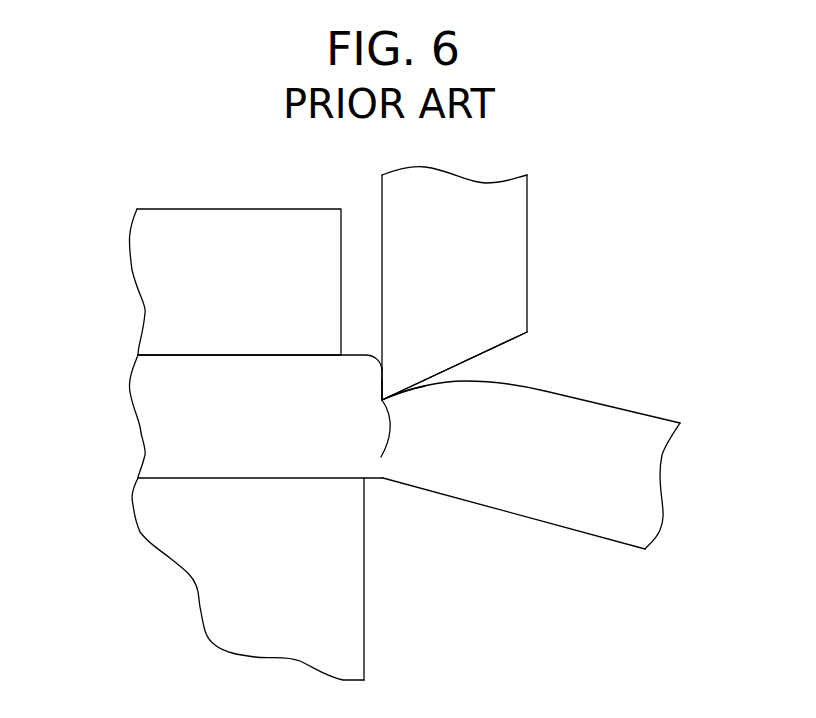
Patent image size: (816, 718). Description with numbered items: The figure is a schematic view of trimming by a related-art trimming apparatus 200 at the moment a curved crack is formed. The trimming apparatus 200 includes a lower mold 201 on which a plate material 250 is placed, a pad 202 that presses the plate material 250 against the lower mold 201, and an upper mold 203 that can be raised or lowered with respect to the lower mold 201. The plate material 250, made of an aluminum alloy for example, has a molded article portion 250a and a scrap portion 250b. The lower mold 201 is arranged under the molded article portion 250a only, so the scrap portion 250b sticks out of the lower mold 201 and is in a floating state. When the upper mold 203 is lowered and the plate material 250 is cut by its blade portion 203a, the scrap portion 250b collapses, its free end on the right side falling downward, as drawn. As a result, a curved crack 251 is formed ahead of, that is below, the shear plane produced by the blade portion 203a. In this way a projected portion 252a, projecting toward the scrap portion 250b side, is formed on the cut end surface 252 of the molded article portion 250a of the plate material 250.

The trimming apparatus 200 is at (591, 178).
The lower mold 201 is at (352, 603).
The pad 202 is at (268, 219).
The upper mold 203 is at (512, 237).
The blade portion 203a is at (381, 393).
The plate material 250 is at (573, 398).
The molded article portion 250a is at (165, 418).
The scrap portion 250b is at (628, 428).
The curved crack 251 is at (390, 408).
The cut end surface 252 is at (383, 378).
The projected portion 252a is at (392, 428).